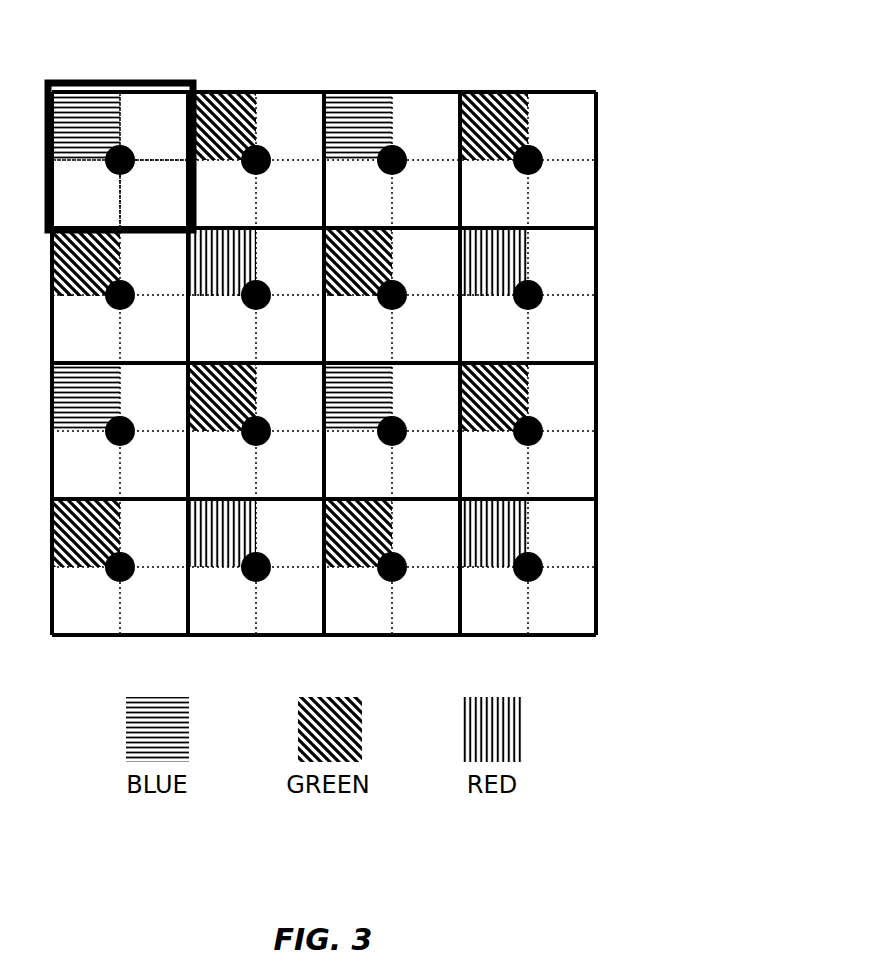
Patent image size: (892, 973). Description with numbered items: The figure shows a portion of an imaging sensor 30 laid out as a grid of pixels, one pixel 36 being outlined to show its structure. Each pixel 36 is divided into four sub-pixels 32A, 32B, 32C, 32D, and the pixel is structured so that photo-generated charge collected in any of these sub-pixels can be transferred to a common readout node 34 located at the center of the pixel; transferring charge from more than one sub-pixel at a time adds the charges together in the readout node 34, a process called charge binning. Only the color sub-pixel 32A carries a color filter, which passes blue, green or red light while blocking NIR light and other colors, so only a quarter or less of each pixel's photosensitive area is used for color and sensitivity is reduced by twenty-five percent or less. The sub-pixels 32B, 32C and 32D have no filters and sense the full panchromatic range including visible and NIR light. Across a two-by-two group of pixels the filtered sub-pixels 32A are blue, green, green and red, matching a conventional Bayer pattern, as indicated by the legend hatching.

The imaging sensor 30 is at (686, 95).
The color sub-pixel 32A is at (155, 195).
The sub-pixel 32B is at (153, 127).
The sub-pixel 32C is at (87, 193).
The sub-pixel 32D is at (153, 193).
The readout node 34 is at (268, 150).
The pixel 36 is at (48, 127).